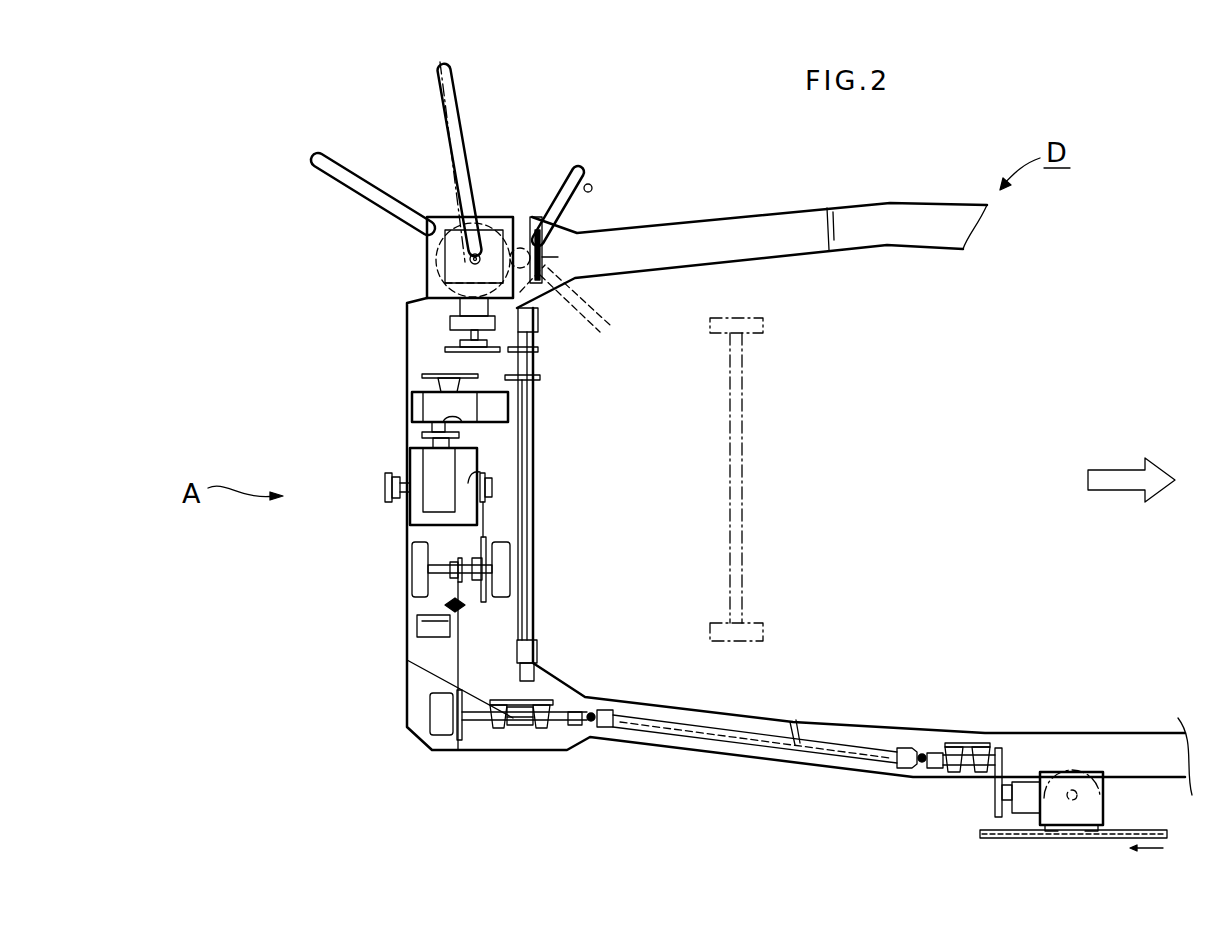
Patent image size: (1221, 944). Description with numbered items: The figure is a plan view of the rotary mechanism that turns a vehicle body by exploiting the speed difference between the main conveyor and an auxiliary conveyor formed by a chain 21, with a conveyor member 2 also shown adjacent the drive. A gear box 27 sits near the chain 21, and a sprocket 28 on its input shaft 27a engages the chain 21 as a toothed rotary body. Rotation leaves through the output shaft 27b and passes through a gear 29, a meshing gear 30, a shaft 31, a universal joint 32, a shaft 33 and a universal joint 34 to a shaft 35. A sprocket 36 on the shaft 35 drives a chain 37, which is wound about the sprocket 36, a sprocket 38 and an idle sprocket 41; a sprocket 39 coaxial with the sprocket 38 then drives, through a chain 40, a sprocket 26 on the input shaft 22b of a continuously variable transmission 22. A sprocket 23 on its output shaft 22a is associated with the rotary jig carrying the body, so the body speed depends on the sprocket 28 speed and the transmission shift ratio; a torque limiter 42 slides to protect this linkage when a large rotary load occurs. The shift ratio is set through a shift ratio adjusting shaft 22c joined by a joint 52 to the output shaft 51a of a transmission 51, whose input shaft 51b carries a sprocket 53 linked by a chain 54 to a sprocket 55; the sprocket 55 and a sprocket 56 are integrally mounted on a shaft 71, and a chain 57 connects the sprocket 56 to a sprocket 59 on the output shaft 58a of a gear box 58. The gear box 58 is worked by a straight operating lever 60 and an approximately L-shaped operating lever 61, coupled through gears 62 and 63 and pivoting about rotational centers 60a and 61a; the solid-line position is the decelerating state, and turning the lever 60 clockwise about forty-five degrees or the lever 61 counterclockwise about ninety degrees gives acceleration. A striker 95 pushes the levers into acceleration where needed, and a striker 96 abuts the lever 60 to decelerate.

The workpiece / pallet 2 is at (770, 325).
The chain 21 is at (1013, 840).
The continuously variable transmission 22 is at (410, 520).
The output shaft 22a is at (410, 505).
The input shaft 22b is at (478, 472).
The shift ratio adjusting shaft 22c is at (428, 455).
The sprocket 23 is at (385, 486).
The sprocket 26 is at (492, 487).
The gear box 27 is at (1100, 772).
The input shaft 27a is at (1075, 790).
The output shaft 27b is at (1006, 785).
The sprocket 28 is at (1105, 795).
The gear 29 is at (995, 826).
The gear 30 is at (997, 750).
The shaft 31 is at (960, 775).
The universal joint 32 is at (905, 770).
The shaft 33 is at (747, 750).
The universal joint 34 is at (600, 730).
The shaft 35 is at (520, 725).
The sprocket 36 is at (458, 750).
The chain 37 is at (457, 652).
The sprocket 38 is at (487, 600).
The sprocket 39 is at (505, 586).
The chain 40 is at (485, 522).
The idle sprocket 41 is at (445, 601).
The torque limiter 42 is at (437, 714).
The transmission 51 is at (412, 405).
The output shaft 51a is at (476, 420).
The input shaft 51b is at (440, 390).
The joint 52 is at (425, 436).
The sprocket 53 is at (430, 377).
The chain 54 is at (535, 418).
The sprocket 55 is at (545, 380).
The sprocket 56 is at (543, 350).
The chain 57 is at (540, 379).
The gear box 58 is at (430, 255).
The output shaft 58a is at (448, 325).
The sprocket 59 is at (470, 350).
The operating lever 60 is at (325, 155).
The rotational center 60a is at (440, 283).
The operating lever 61 is at (585, 172).
The rotational center 61a is at (520, 248).
The gear 62 is at (478, 228).
The gear 63 is at (548, 270).
The shaft 71 is at (530, 557).
The striker 95 is at (598, 188).
The striker 96 is at (463, 110).